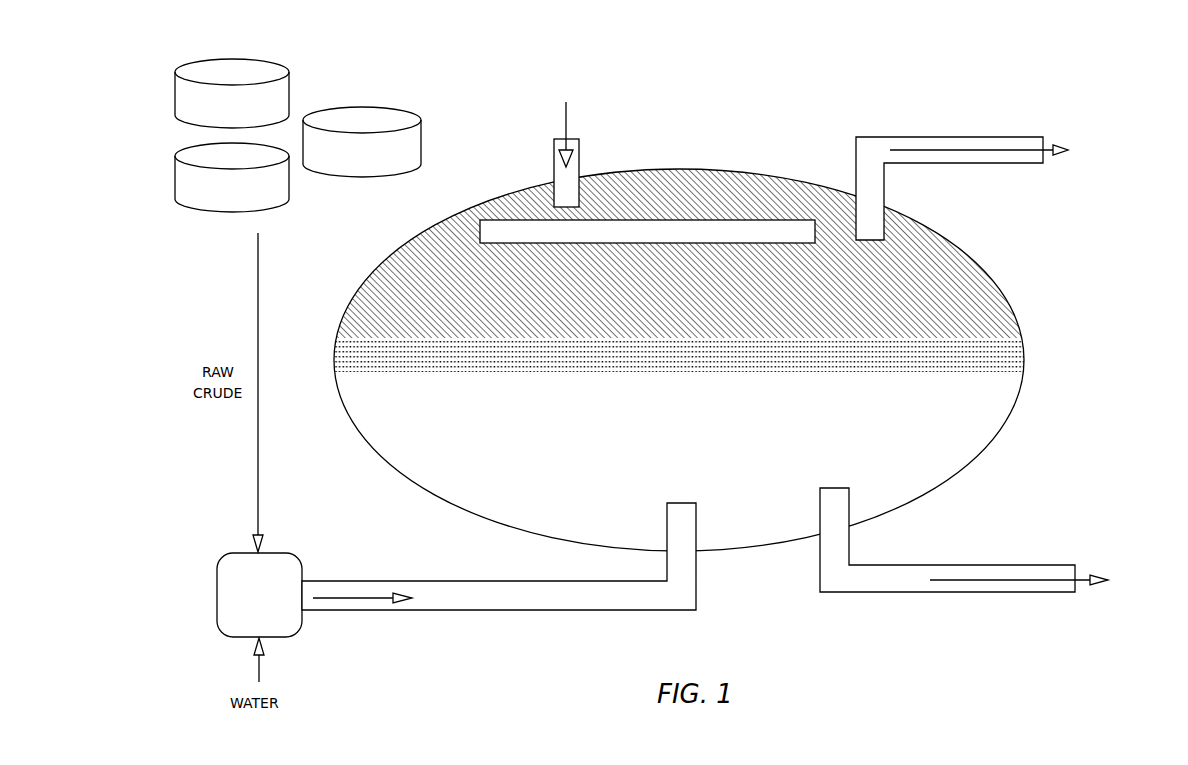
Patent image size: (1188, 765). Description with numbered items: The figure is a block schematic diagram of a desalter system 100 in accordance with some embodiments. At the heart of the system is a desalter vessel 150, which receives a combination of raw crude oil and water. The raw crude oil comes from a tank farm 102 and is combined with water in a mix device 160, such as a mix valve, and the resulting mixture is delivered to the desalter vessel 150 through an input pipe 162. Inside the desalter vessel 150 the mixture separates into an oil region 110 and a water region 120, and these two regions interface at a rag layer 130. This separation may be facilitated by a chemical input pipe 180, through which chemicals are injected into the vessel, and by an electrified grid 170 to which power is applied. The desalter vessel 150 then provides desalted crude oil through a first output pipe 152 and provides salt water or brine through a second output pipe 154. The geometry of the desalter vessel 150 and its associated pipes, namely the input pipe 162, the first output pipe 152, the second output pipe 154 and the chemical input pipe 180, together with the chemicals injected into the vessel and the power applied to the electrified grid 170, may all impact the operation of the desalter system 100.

The desalter system 100 is at (852, 82).
The tank farm 102 is at (393, 108).
The oil region 110 is at (687, 317).
The water region 120 is at (689, 462).
The rag layer 130 is at (842, 373).
The desalter vessel 150 is at (787, 173).
The first output pipe 152 is at (960, 136).
The second output pipe 154 is at (1007, 593).
The mix device 160 is at (280, 552).
The input pipe 162 is at (415, 580).
The electrified grid 170 is at (662, 237).
The chemical input pipe 180 is at (553, 149).